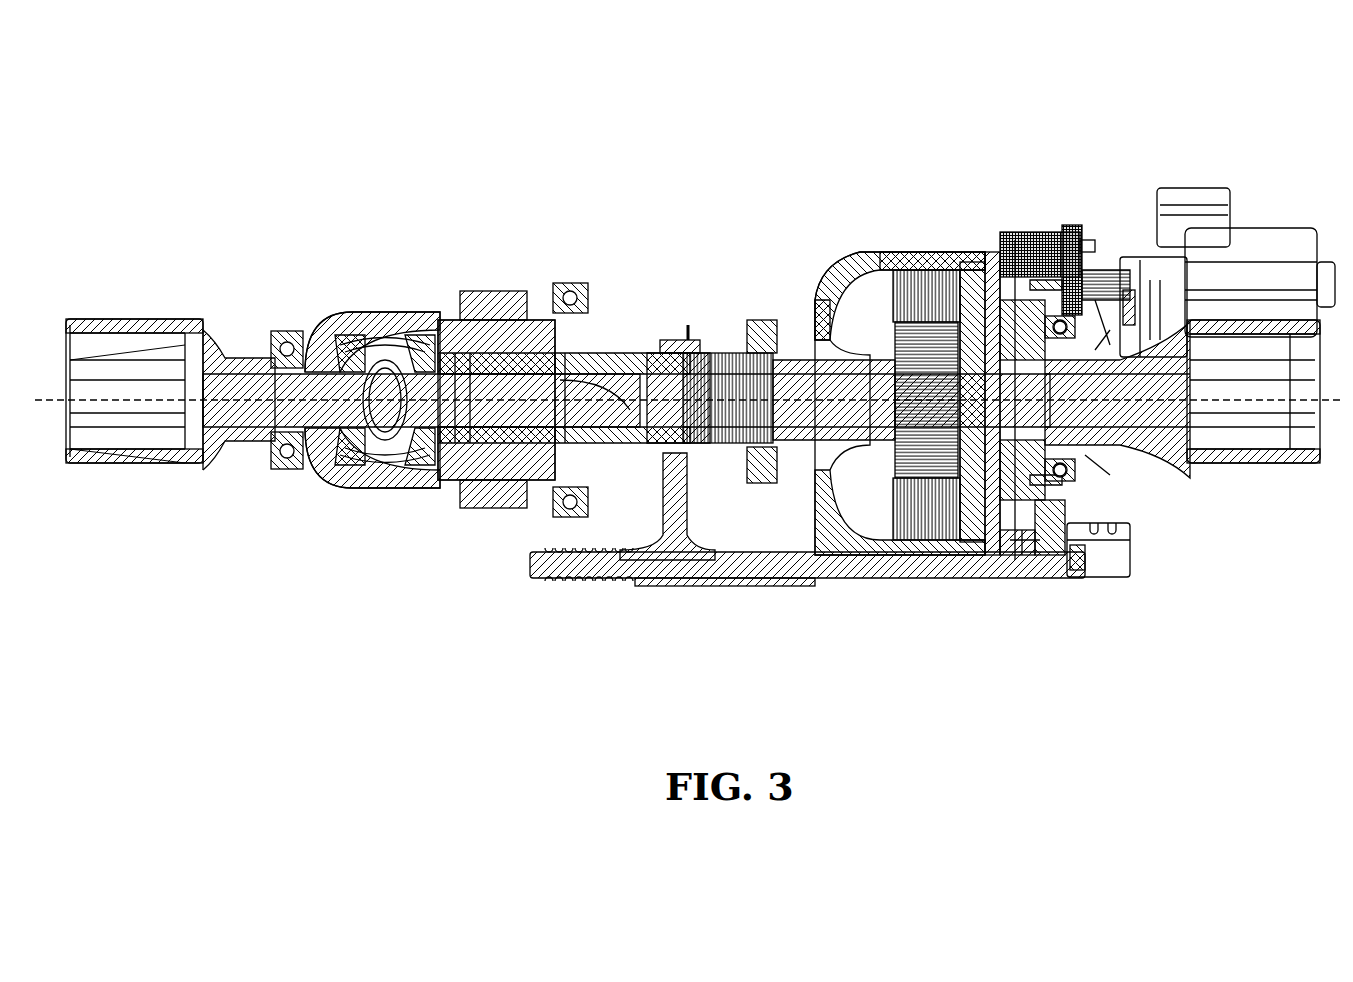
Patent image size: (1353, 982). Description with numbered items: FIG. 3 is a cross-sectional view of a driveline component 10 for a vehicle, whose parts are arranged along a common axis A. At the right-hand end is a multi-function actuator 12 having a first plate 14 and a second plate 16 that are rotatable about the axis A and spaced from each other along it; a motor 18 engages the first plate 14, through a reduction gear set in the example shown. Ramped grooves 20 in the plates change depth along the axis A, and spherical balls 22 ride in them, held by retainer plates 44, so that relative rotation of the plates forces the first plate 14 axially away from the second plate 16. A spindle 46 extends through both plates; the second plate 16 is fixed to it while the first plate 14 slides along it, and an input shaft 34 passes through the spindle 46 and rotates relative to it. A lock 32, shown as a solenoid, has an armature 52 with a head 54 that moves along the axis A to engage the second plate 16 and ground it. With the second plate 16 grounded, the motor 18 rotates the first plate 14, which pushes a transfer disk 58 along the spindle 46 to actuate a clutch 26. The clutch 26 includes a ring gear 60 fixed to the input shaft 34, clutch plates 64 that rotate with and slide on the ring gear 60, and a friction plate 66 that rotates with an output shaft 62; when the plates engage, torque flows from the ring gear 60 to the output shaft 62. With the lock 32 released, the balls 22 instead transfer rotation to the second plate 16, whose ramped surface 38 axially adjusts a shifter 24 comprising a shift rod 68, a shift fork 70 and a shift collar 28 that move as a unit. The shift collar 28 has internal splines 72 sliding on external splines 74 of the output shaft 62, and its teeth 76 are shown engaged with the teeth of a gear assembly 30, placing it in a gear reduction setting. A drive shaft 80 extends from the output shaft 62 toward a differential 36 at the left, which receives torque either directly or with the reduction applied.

The driveline component 10 is at (735, 150).
The actuator 12 is at (1114, 600).
The first plate 14 is at (1012, 228).
The second plate 16 is at (1050, 232).
The motor 18 is at (1275, 225).
The ramped grooves 20 is at (1000, 262).
The balls 22 is at (985, 262).
The shifter 24 is at (770, 598).
The clutch 26 is at (901, 238).
The shift collar 28 is at (640, 340).
The gear assembly 30 is at (497, 272).
The lock 32 is at (1125, 555).
The input shaft 34 is at (1262, 460).
The differential 36 is at (378, 318).
The ramped surface 38 is at (990, 580).
The retainer plates 44 is at (1150, 425).
The spindle 46 is at (1108, 300).
The armature 52 is at (1050, 565).
The head 54 is at (1012, 575).
The transfer disk 58 is at (900, 540).
The ring gear 60 is at (878, 540).
The output shaft 62 is at (775, 358).
The clutch plates 64 is at (870, 255).
The friction plate 66 is at (835, 275).
The shift rod 68 is at (805, 580).
The shift fork 70 is at (690, 495).
The internal splines 72 is at (690, 340).
The external splines 74 is at (740, 345).
The teeth 76 is at (600, 340).
The drive shaft 80 is at (610, 410).
The axis A is at (1330, 402).